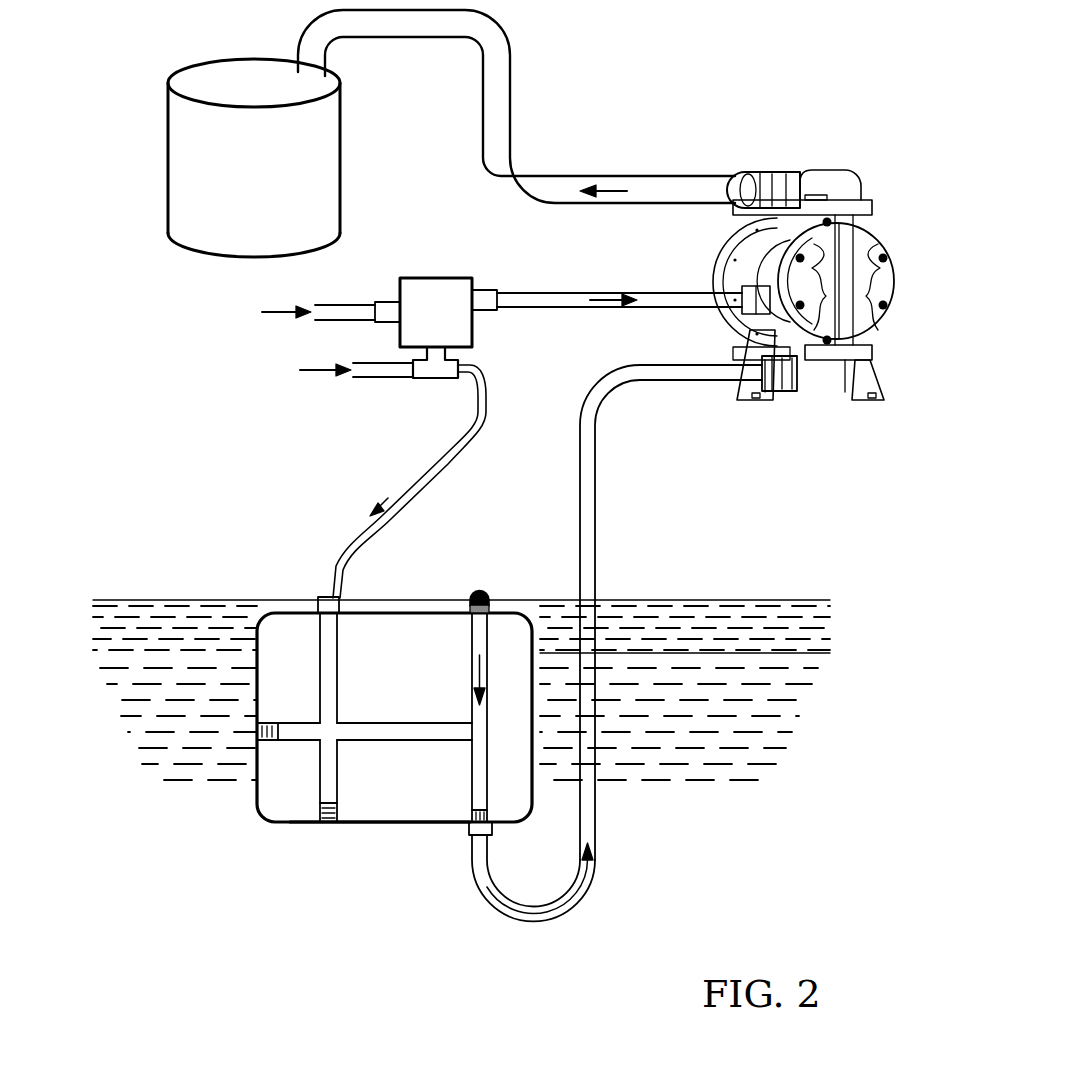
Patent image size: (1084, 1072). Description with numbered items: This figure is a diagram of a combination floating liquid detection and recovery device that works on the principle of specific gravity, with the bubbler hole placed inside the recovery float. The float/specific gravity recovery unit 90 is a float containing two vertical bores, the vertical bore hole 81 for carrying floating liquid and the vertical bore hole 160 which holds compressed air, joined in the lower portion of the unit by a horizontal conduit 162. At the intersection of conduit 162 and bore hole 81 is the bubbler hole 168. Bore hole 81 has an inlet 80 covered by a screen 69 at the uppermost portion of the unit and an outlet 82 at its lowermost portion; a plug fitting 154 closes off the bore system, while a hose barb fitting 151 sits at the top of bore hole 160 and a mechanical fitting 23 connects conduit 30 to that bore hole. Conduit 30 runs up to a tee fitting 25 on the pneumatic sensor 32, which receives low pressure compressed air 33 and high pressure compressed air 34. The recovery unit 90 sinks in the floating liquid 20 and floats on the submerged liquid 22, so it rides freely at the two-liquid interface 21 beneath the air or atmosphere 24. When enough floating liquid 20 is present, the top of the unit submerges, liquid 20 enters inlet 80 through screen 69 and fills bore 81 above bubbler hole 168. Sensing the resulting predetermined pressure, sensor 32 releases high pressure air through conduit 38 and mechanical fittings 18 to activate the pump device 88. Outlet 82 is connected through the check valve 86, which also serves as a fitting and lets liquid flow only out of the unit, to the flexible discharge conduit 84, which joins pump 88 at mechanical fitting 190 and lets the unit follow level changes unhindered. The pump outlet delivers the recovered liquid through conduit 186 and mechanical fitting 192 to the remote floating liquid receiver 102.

The floating liquid receiver 102 is at (155, 122).
The conduit 186 is at (528, 90).
The mechanical fitting 192 is at (763, 163).
The pump device 88 is at (880, 213).
The conduit for carrying high pressure air from sensor 38 is at (652, 290).
The pneumatic sensor 32 is at (434, 278).
The mechanical fitting 18 is at (388, 302).
The compressed air (high pressure) 34 is at (296, 312).
The compressed air (low pressure) 33 is at (334, 370).
The tee fitting 25 is at (436, 380).
The conduit 30 is at (396, 486).
The mechanical fitting 190 is at (768, 405).
The air (atmosphere) 24 is at (930, 503).
The discharge conduit 84 is at (598, 840).
The mechanical fitting/check valve 86 is at (470, 878).
The floating liquid 20 is at (838, 614).
The floating liquid-submerged liquid interface 21 is at (833, 650).
The submerged liquid 22 is at (815, 727).
The float/specific gravity recovery unit 90 is at (258, 795).
The mechanical fitting (hose barb) 151 is at (293, 823).
The vertical bore hole which holds compressed air 160 is at (314, 652).
The mechanical fitting 23 is at (318, 602).
The inlet for recovering floating liquid 80 is at (462, 606).
The screen 69 is at (492, 595).
The conduit 162 is at (292, 722).
The bubbler hole 168 is at (470, 730).
The mechanical fitting (plug) 154 is at (257, 735).
The vertical bore hole for carrying floating liquid 81 is at (338, 823).
The outlet 82 is at (469, 830).